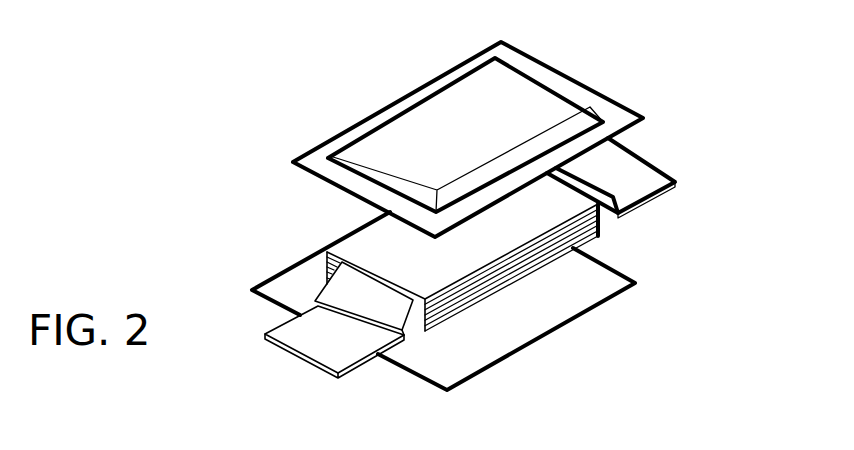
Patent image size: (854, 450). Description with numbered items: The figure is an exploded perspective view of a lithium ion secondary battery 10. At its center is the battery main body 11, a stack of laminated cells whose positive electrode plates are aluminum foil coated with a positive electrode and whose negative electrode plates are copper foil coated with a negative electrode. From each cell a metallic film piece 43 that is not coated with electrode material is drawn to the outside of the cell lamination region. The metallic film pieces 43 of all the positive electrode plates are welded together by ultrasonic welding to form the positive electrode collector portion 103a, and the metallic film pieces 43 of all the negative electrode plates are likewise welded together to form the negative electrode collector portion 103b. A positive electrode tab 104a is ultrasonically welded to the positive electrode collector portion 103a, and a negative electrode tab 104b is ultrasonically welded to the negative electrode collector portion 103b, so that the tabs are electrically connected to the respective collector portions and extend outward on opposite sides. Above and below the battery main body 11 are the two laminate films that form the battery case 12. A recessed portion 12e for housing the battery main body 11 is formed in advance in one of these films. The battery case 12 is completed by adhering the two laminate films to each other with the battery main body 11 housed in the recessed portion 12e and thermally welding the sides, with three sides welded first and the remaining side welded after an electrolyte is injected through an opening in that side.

The lithium ion secondary battery 10 is at (303, 122).
The battery main body 11 is at (522, 236).
The battery case 12 is at (568, 88).
The recessed portion 12e is at (467, 88).
The metallic film piece 43 is at (407, 327).
The positive electrode collector portion 103a is at (333, 305).
The negative electrode collector portion 103b is at (636, 201).
The positive electrode tab 104a is at (322, 352).
The negative electrode tab 104b is at (642, 175).